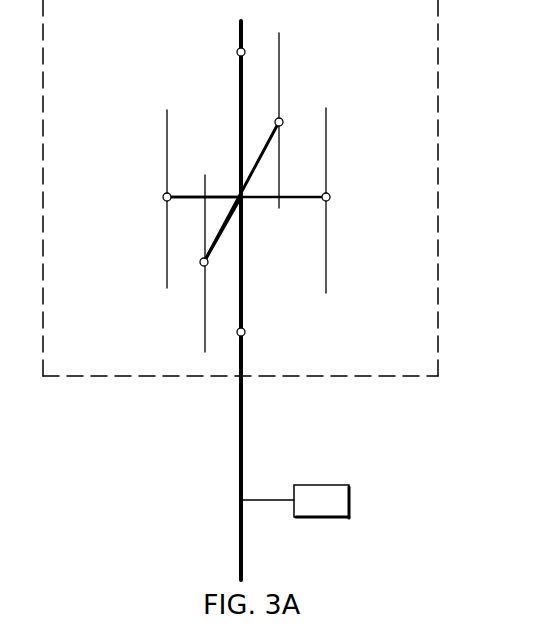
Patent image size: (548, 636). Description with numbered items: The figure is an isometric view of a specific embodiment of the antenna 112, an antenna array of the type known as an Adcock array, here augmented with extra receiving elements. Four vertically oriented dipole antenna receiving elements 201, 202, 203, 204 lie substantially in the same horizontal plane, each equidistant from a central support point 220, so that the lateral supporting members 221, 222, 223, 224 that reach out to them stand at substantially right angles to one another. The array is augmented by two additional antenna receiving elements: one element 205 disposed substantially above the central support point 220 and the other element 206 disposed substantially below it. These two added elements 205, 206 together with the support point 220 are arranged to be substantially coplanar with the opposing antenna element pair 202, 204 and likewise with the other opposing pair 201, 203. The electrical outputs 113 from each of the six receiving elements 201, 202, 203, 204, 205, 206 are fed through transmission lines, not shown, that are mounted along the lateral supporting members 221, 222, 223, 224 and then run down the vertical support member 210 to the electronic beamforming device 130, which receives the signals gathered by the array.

The antenna 112 is at (438, 78).
The electrical outputs 113 is at (262, 497).
The electronic beamforming device 130 is at (321, 501).
The dipole antenna receiving element 201 is at (330, 196).
The dipole antenna receiving element 202 is at (201, 264).
The dipole antenna receiving element 203 is at (164, 194).
The dipole antenna receiving element 204 is at (283, 121).
The additional antenna receiving element 205 is at (239, 48).
The additional antenna receiving element 206 is at (246, 331).
The vertical support member 210 is at (243, 418).
The central support point 220 is at (244, 199).
The lateral supporting member 221 is at (297, 202).
The lateral supporting member 222 is at (218, 236).
The lateral supporting member 223 is at (223, 195).
The lateral supporting member 224 is at (266, 145).